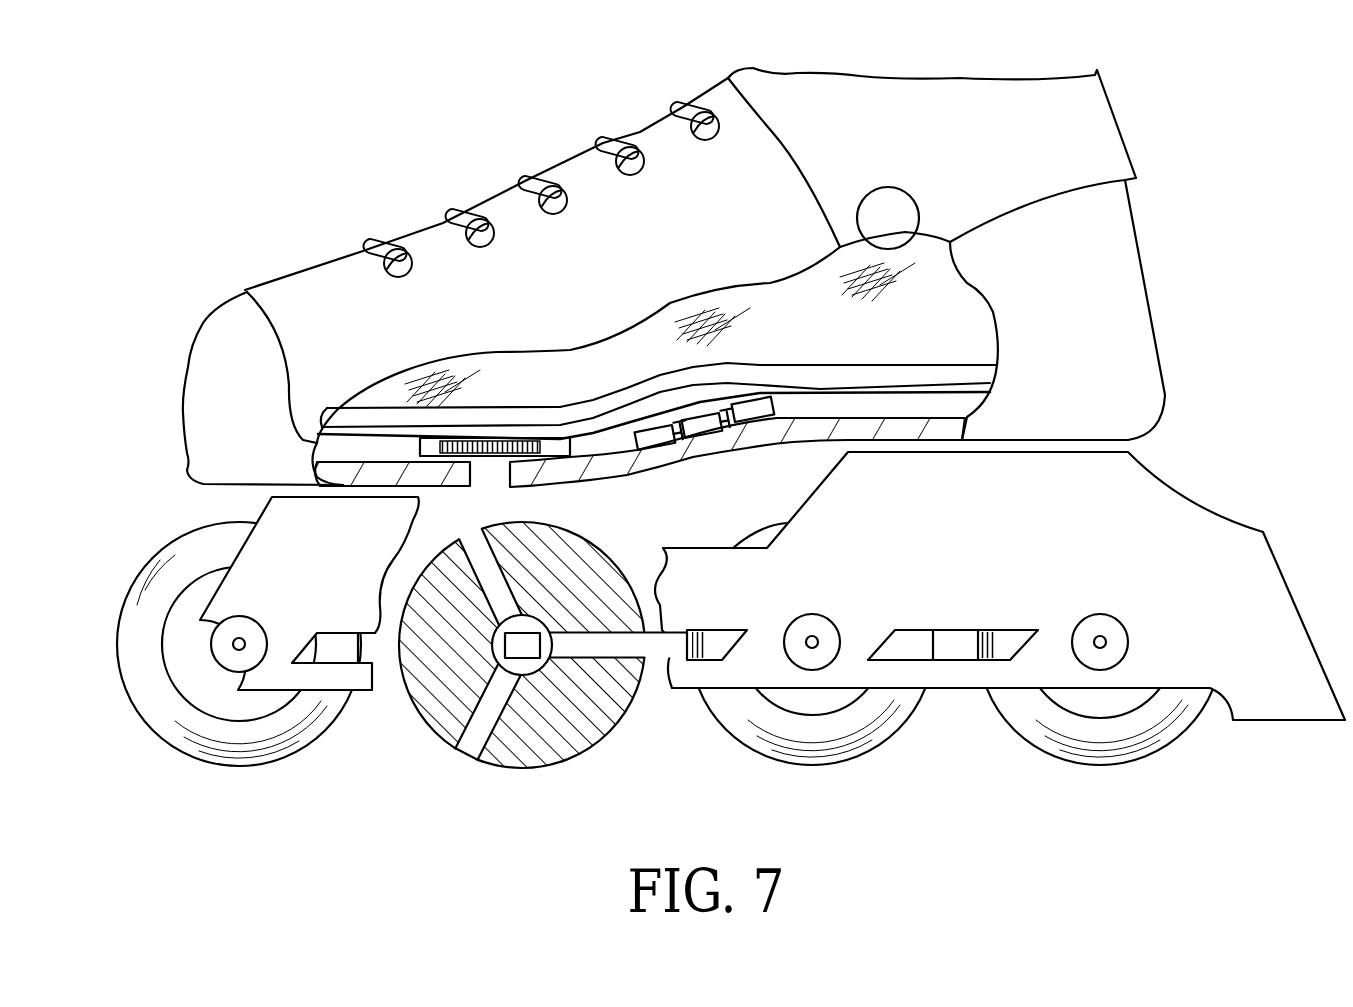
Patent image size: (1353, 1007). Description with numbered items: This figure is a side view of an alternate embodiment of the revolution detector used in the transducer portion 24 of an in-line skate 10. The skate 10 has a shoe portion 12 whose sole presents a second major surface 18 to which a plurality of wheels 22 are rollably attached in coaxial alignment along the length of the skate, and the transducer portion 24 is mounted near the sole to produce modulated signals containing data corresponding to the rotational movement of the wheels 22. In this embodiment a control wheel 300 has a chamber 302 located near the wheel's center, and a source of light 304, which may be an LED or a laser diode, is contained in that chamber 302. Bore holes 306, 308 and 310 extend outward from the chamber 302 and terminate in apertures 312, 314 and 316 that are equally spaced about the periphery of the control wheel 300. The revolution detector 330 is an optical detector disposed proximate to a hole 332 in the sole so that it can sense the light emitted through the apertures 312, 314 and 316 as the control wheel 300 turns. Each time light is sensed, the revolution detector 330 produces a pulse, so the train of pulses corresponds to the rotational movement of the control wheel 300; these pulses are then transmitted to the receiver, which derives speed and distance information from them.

The in-line skate 10 is at (420, 117).
The shoe portion 12 is at (270, 283).
The second major surface 18 is at (752, 452).
The wheels 22 is at (302, 742).
The transducer portion 24 is at (553, 447).
The control wheel 300 is at (519, 662).
The chamber 302 is at (540, 620).
The source of light 304 is at (505, 645).
The bore hole 306 is at (488, 713).
The bore hole 308 is at (480, 590).
The bore hole 310 is at (655, 594).
The aperture 312 is at (465, 748).
The aperture 314 is at (458, 538).
The aperture 316 is at (828, 412).
The revolution detector 330 is at (497, 445).
The hole 332 is at (487, 480).